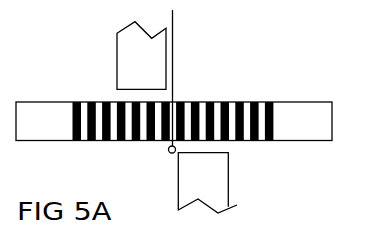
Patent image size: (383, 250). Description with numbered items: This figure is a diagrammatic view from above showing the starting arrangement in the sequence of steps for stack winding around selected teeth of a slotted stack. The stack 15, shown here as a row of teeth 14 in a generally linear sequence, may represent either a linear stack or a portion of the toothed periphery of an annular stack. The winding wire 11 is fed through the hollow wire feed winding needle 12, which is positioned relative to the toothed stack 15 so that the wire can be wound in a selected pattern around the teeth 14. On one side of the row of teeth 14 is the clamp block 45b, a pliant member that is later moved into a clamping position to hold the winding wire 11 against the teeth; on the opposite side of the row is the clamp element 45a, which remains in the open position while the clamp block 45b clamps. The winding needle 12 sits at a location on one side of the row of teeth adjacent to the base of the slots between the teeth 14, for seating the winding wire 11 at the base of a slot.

The winding wire 11 is at (174, 38).
The wire feed winding needle 12 is at (169, 152).
The teeth 14 is at (237, 102).
The slotted stack 15 is at (302, 102).
The clamp element 45a is at (117, 50).
The clamp block 45b is at (228, 188).